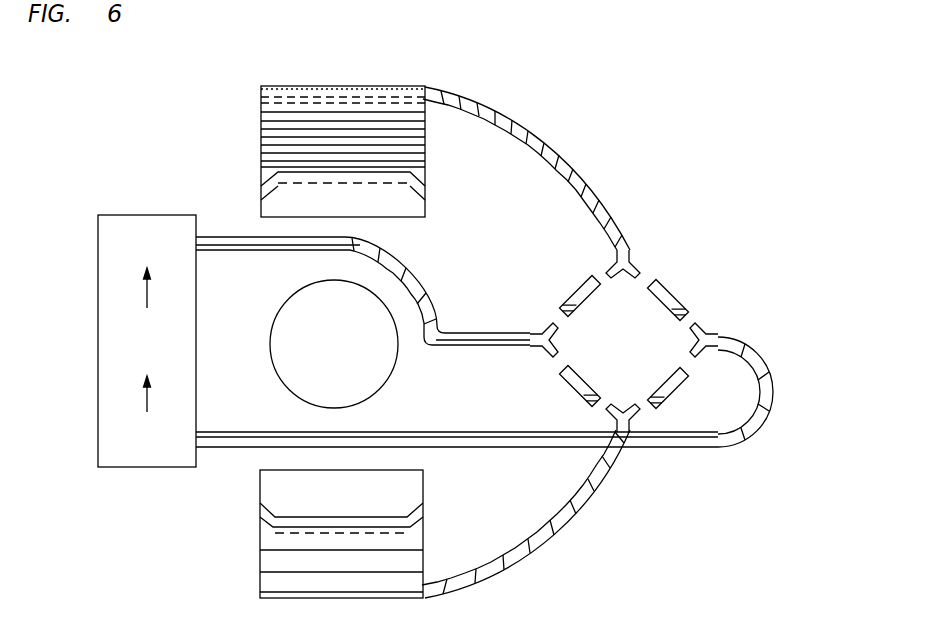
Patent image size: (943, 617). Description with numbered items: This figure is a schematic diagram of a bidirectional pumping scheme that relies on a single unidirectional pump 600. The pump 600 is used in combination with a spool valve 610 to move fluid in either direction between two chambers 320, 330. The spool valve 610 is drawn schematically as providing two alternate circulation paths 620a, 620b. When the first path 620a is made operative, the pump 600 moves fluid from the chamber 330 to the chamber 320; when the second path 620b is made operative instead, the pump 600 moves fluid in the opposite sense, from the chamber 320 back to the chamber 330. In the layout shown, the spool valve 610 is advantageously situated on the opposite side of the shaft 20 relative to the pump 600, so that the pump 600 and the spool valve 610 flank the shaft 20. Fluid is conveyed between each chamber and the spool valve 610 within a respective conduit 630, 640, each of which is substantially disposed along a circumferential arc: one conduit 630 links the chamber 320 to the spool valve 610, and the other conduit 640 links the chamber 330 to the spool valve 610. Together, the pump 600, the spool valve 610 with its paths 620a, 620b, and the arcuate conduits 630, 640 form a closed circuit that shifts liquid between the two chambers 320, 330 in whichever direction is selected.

The shaft 20 is at (385, 382).
The chamber 320 is at (261, 158).
The chamber 330 is at (260, 563).
The unidirectional pump 600 is at (98, 250).
The spool valve 610 is at (633, 329).
The circulation path 620a is at (566, 301).
The circulation path 620b is at (690, 316).
The conduit 630 is at (557, 148).
The conduit 640 is at (584, 520).